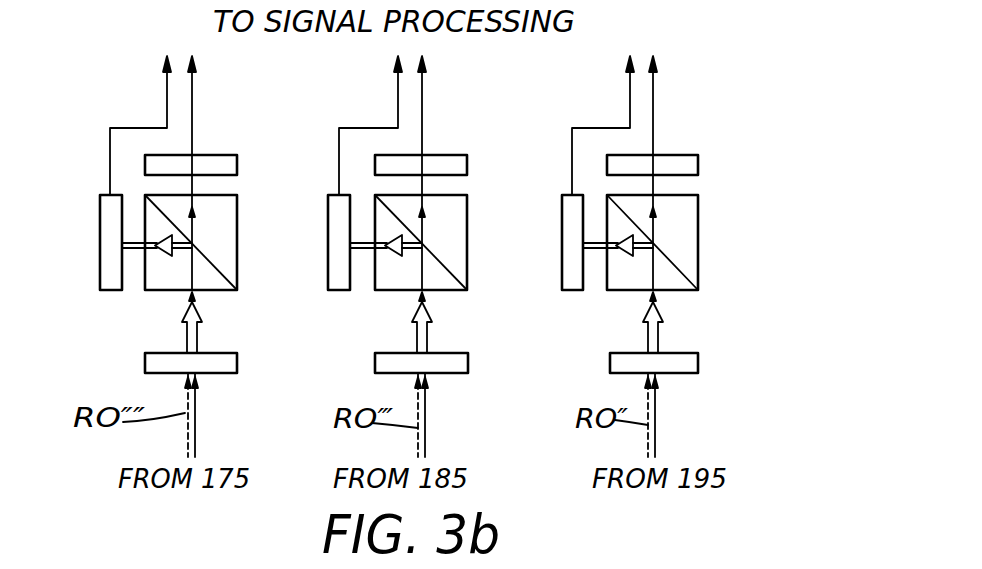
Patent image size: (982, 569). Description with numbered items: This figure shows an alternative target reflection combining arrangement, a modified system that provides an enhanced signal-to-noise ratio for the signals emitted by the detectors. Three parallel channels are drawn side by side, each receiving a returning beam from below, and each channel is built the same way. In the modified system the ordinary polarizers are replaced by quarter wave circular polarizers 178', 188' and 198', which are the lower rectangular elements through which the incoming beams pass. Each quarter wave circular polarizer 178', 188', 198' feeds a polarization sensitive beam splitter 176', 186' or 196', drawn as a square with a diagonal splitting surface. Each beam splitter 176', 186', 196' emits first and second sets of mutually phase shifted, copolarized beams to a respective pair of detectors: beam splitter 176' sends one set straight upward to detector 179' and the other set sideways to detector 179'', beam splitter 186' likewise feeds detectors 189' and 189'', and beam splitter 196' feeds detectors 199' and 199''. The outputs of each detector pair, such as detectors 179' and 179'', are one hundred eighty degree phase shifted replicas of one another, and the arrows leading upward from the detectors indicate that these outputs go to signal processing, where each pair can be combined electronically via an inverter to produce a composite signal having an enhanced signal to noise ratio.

The detector 179' is at (230, 143).
The polarization sensitive beam splitter 176' is at (223, 274).
The detector 179'' is at (62, 267).
The quarter wave circular polarizer 178' is at (235, 346).
The detector 189' is at (454, 144).
The polarization sensitive beam splitter 186' is at (446, 274).
The detector 189'' is at (363, 264).
The quarter wave circular polarizer 188' is at (464, 345).
The detector 199' is at (693, 144).
The polarization sensitive beam splitter 196' is at (696, 274).
The detector 199'' is at (599, 264).
The quarter wave circular polarizer 198' is at (699, 345).